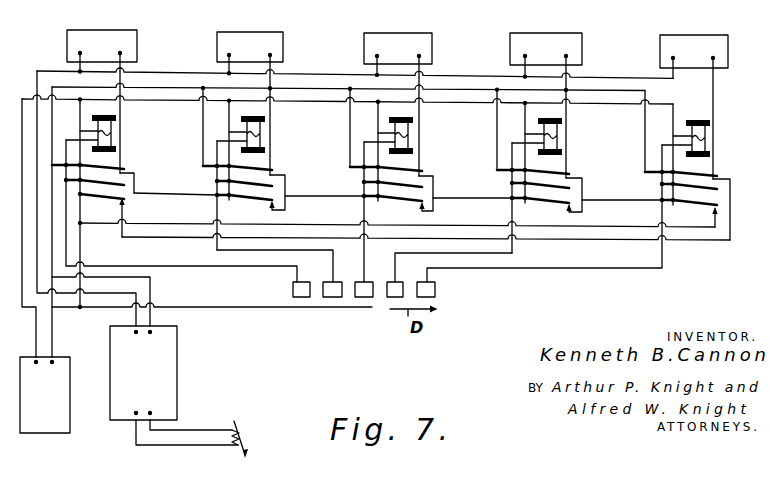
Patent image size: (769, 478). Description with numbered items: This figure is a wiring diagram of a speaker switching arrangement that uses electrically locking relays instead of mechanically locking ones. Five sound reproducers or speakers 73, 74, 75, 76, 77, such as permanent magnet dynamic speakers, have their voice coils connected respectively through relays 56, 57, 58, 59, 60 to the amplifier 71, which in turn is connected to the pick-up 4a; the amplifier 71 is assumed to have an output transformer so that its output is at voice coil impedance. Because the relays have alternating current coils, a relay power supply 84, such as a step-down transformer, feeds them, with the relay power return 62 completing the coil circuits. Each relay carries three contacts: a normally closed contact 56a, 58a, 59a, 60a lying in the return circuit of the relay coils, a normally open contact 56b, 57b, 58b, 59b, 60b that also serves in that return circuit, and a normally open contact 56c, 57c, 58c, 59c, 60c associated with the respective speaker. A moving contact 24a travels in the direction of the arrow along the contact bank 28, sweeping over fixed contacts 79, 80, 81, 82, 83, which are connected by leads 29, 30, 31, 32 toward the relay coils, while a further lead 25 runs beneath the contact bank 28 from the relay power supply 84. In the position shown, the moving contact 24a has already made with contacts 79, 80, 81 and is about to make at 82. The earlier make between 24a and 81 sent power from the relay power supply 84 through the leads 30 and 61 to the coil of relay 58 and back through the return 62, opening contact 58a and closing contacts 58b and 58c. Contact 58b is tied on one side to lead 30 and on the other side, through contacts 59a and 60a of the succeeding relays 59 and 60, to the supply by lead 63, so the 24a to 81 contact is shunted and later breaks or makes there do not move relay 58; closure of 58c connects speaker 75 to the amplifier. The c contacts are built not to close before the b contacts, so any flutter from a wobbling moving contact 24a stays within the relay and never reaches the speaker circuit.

The speaker 73 is at (98, 31).
The speaker 74 is at (254, 32).
The speaker 75 is at (396, 33).
The speaker 76 is at (543, 33).
The speaker 77 is at (681, 35).
The relay 56 is at (114, 141).
The normally closed contact 56a is at (128, 201).
The normally open contact 56b is at (136, 175).
The normally open contact 56c is at (124, 155).
The relay 57 is at (263, 143).
The normally open contact 57b is at (279, 175).
The normally open contact 57c is at (271, 165).
The relay 58 is at (412, 143).
The normally closed contact 58a is at (418, 205).
The normally open contact 58b is at (429, 177).
The normally open contact 58c is at (422, 166).
The relay 59 is at (561, 144).
The normally closed contact 59a is at (566, 207).
The normally open contact 59b is at (580, 178).
The normally open contact 59c is at (571, 170).
The relay 60 is at (709, 137).
The normally closed contact 60a is at (712, 206).
The normally open contact 60b is at (732, 180).
The normally open contact 60c is at (719, 172).
The lead 61 is at (368, 133).
The relay power return 62 is at (36, 324).
The lead 63 is at (81, 251).
The lead 29 is at (216, 249).
The lead 30 is at (364, 251).
The lead 31 is at (513, 251).
The lead 32 is at (541, 269).
The contact bank 28 is at (214, 287).
The conductor 25 is at (268, 309).
The moving contact 24a is at (377, 297).
The fixed contact 79 is at (293, 286).
The fixed contact 80 is at (327, 282).
The fixed contact 81 is at (357, 282).
The fixed contact 82 is at (390, 282).
The fixed contact 83 is at (421, 282).
The amplifier 71 is at (160, 389).
The relay power supply 84 is at (62, 411).
The pick-up 4a is at (245, 432).